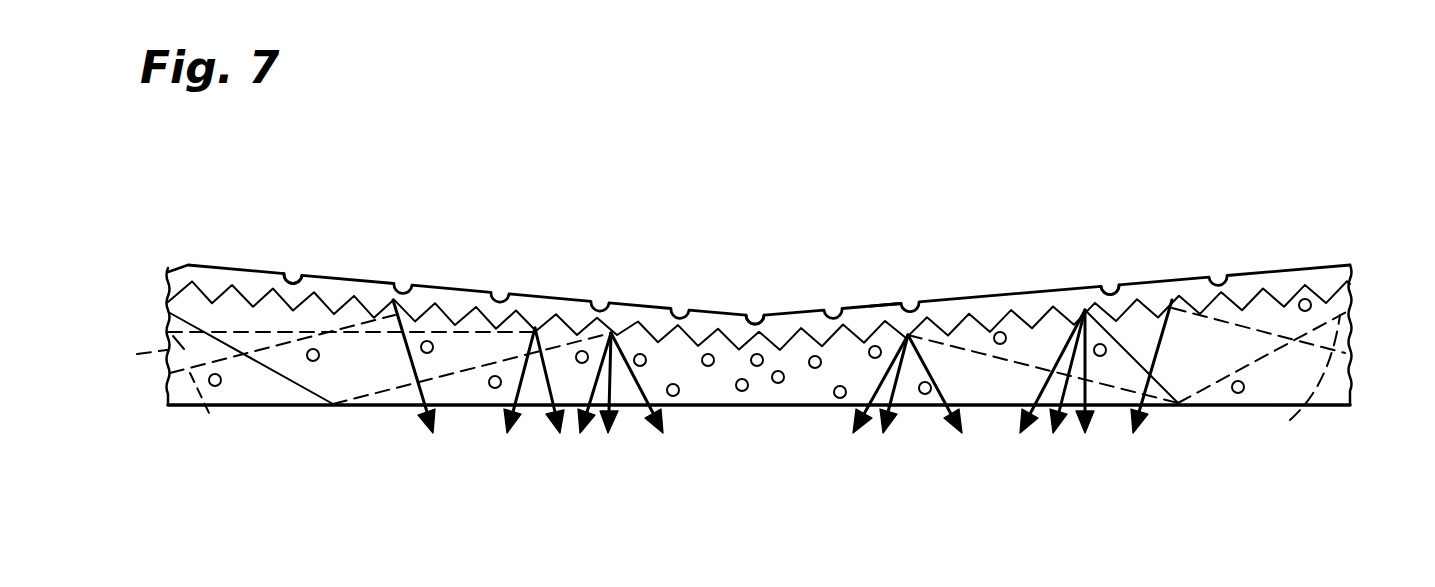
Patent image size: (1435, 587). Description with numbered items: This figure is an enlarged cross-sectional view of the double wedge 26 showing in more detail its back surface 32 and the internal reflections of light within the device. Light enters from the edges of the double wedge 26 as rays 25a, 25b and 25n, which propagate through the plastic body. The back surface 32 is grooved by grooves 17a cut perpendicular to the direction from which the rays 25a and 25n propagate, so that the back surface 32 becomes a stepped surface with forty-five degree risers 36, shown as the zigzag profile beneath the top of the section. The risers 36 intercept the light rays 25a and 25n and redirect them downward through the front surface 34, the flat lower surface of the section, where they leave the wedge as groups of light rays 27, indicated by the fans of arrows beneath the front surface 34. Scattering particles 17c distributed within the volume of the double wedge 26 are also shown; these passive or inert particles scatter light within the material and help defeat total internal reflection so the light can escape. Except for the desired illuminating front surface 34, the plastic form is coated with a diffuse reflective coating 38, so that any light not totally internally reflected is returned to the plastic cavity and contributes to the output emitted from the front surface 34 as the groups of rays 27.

The grooves 17a is at (1110, 287).
The scattering particles 17c is at (580, 351).
The light ray 25a is at (718, 385).
The light ray 25b is at (1355, 338).
The light ray 25n is at (204, 415).
The double wedge 26 is at (377, 385).
The groups of light rays 27 is at (677, 443).
The back surface 32 is at (641, 292).
The front surface 34 is at (373, 407).
The risers 36 is at (443, 310).
The diffuse reflective coating 38 is at (881, 300).